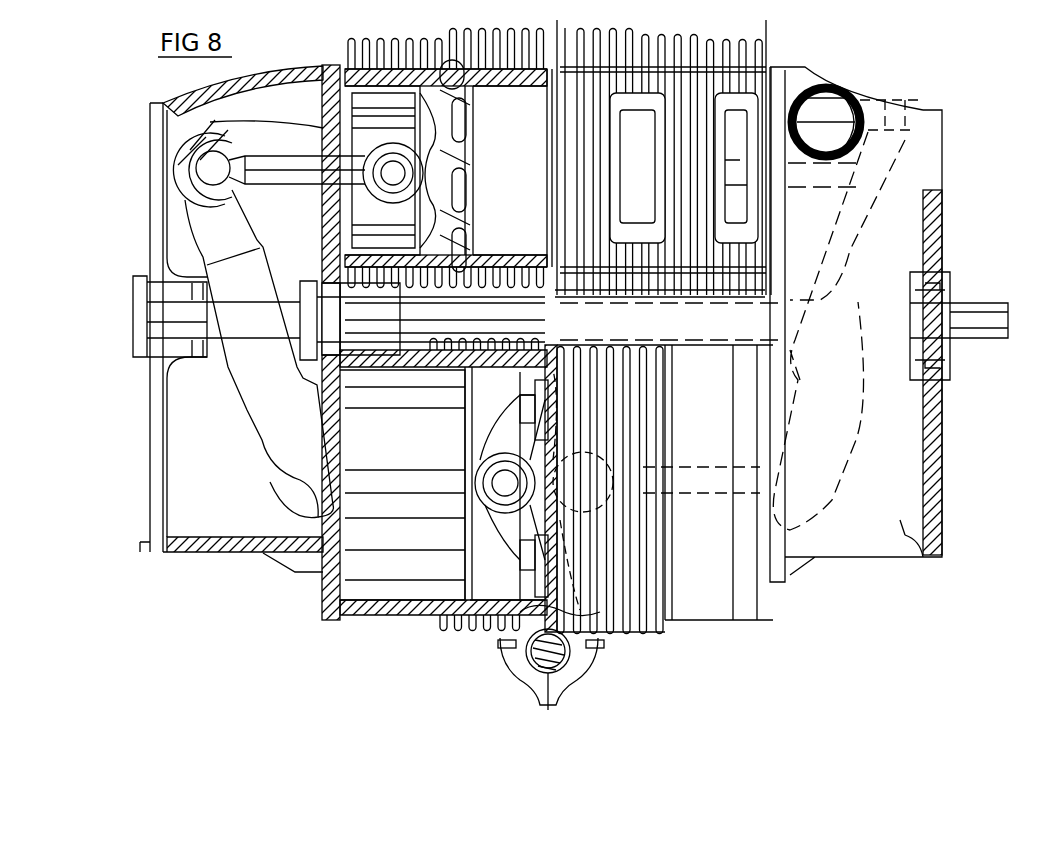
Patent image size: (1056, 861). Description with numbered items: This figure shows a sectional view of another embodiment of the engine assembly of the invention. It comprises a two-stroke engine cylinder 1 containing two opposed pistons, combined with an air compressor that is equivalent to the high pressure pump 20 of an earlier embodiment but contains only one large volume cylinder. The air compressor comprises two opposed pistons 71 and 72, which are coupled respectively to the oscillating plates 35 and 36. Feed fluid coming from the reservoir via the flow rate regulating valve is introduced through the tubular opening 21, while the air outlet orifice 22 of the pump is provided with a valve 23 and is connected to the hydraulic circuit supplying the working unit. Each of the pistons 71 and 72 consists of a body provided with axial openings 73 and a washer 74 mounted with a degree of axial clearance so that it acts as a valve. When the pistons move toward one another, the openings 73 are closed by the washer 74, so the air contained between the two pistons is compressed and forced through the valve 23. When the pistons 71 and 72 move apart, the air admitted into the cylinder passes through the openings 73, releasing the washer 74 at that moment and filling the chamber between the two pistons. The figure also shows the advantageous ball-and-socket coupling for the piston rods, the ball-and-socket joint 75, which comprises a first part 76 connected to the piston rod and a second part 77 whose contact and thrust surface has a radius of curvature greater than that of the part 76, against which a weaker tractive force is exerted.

The two-stroke engine cylinder 1 is at (506, 113).
The high pressure pump 20 is at (414, 535).
The tubular opening 21 is at (832, 95).
The air outlet orifice 22 is at (530, 660).
The valve 23 is at (575, 685).
The oscillating plate 35 is at (260, 408).
The oscillating plate 36 is at (840, 430).
The piston 71 is at (484, 612).
The piston 72 is at (699, 504).
The axial openings 73 is at (527, 412).
The washer 74 is at (600, 395).
The ball-and-socket joint 75 is at (190, 186).
The first part 76 is at (215, 160).
The second part 77 is at (190, 170).